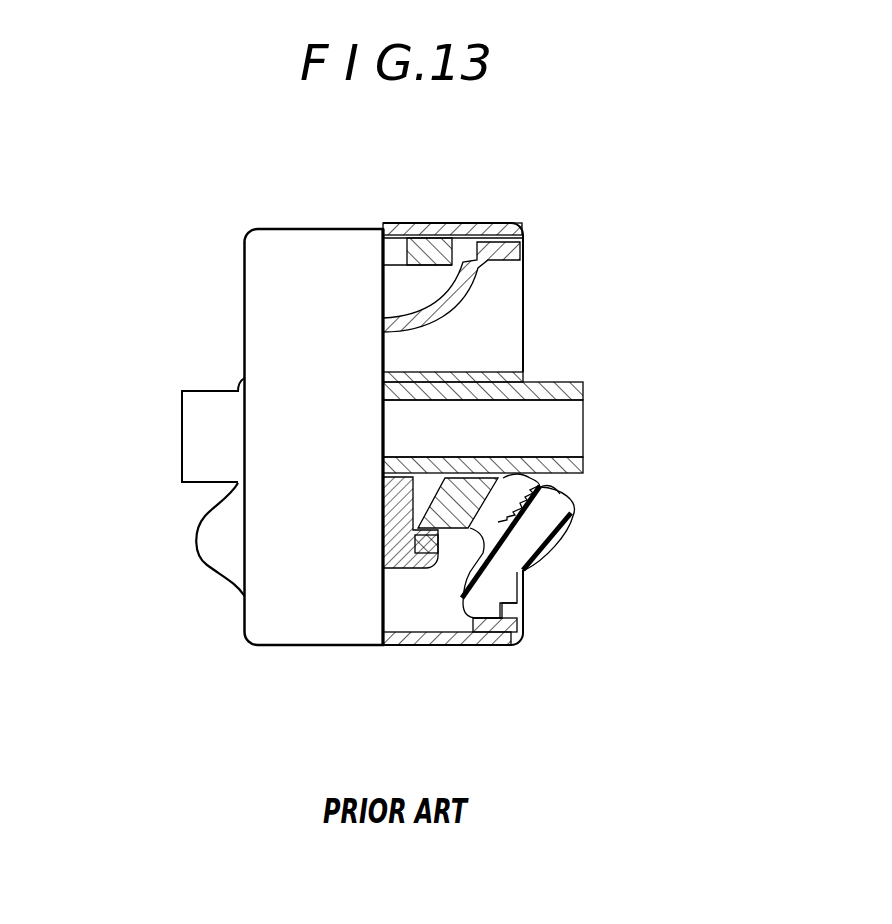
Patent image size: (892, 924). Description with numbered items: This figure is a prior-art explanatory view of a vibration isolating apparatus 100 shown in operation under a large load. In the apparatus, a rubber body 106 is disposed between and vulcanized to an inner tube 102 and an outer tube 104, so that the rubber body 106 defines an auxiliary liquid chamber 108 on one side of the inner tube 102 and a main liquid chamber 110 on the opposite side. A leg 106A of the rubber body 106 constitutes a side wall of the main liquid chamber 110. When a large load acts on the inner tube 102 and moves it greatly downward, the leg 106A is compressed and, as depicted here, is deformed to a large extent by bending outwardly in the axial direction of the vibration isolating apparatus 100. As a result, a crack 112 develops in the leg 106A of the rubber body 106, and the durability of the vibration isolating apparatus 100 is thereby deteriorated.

The vibration isolating apparatus 100 is at (532, 184).
The inner tube 102 is at (583, 386).
The outer tube 104 is at (438, 226).
The rubber body 106 is at (541, 570).
The leg 106A is at (205, 560).
The auxiliary liquid chamber 108 is at (425, 293).
The main liquid chamber 110 is at (434, 616).
The crack 112 is at (540, 486).